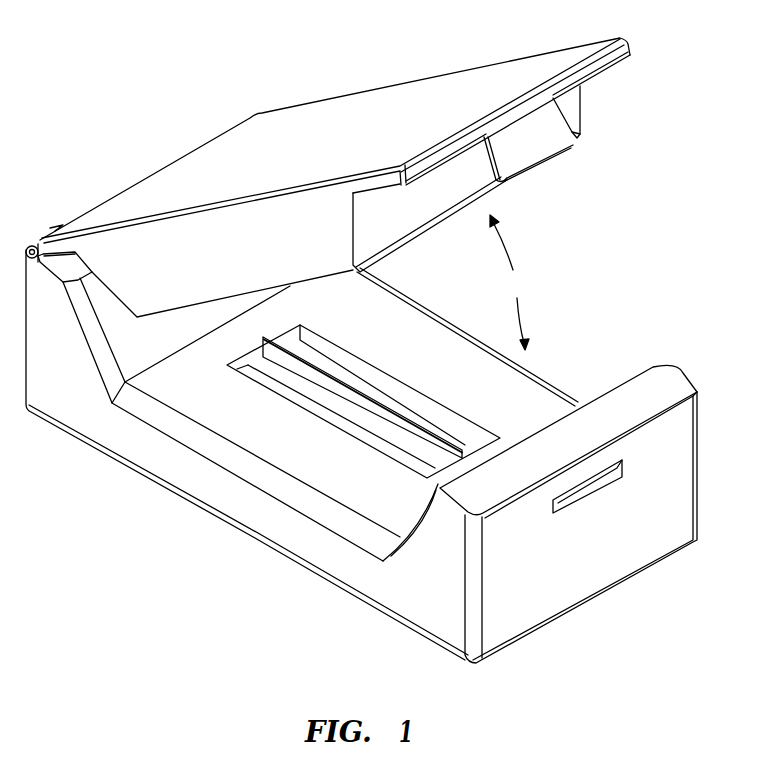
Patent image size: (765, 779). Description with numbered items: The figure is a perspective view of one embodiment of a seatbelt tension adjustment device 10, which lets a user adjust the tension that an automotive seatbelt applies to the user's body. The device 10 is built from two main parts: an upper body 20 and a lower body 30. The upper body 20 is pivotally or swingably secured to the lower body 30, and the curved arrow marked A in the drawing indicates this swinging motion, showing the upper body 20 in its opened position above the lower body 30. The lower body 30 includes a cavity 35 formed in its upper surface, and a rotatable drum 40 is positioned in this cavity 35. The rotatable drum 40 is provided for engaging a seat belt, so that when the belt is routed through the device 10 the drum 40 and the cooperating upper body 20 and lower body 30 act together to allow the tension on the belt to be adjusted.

The seatbelt tension adjustment device 10 is at (222, 86).
The upper body 20 is at (585, 180).
The lower body 30 is at (597, 356).
The cavity 35 is at (432, 413).
The rotatable drum 40 is at (307, 393).